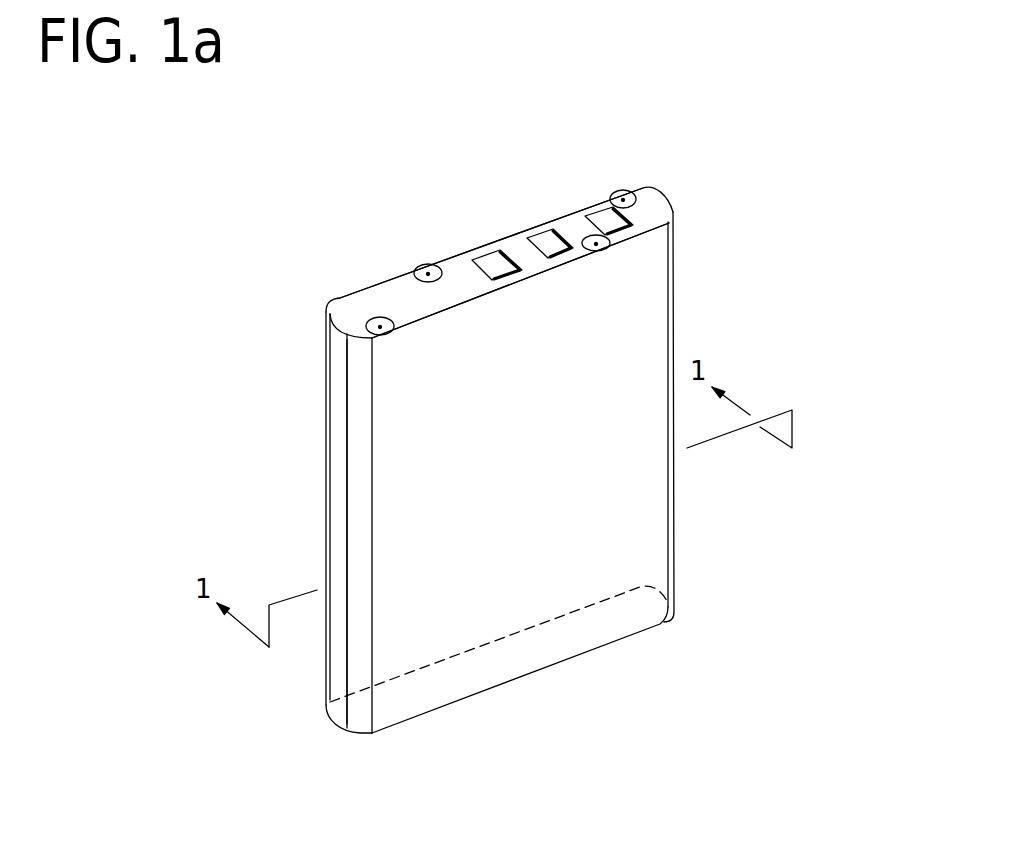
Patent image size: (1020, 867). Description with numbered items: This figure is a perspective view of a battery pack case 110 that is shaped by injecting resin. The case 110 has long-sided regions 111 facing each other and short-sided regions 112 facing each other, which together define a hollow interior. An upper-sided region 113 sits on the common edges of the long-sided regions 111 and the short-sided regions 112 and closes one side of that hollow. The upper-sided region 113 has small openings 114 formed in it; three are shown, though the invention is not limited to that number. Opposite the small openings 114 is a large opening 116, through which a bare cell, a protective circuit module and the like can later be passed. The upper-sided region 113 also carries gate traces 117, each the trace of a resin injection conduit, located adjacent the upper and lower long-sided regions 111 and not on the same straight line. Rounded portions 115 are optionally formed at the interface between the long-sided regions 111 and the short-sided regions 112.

The battery pack case 110 is at (548, 436).
The long-sided regions 111 is at (410, 447).
The short-sided regions 112 is at (337, 362).
The upper-sided region 113 is at (385, 297).
The small opening 114 is at (495, 262).
The rounded portions 115 is at (363, 393).
The large opening 116 is at (545, 648).
The gate trace 117 is at (623, 198).